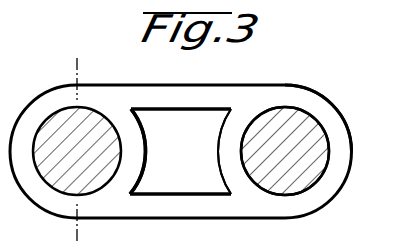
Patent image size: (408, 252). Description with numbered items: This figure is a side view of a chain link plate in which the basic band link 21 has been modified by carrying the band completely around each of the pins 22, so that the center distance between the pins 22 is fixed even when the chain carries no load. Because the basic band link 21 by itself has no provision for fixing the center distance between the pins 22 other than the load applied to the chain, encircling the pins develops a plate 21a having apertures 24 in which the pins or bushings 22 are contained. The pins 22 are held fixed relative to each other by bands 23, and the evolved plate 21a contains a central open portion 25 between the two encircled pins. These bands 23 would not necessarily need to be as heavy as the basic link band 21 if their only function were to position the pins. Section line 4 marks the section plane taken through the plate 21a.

The section line 4- 4 is at (100, 69).
The band link 21 is at (188, 86).
The plate 21a is at (289, 84).
The pins 22 is at (305, 178).
The bands 23 is at (223, 147).
The apertures 24 is at (323, 146).
The central open portion 25 is at (190, 134).